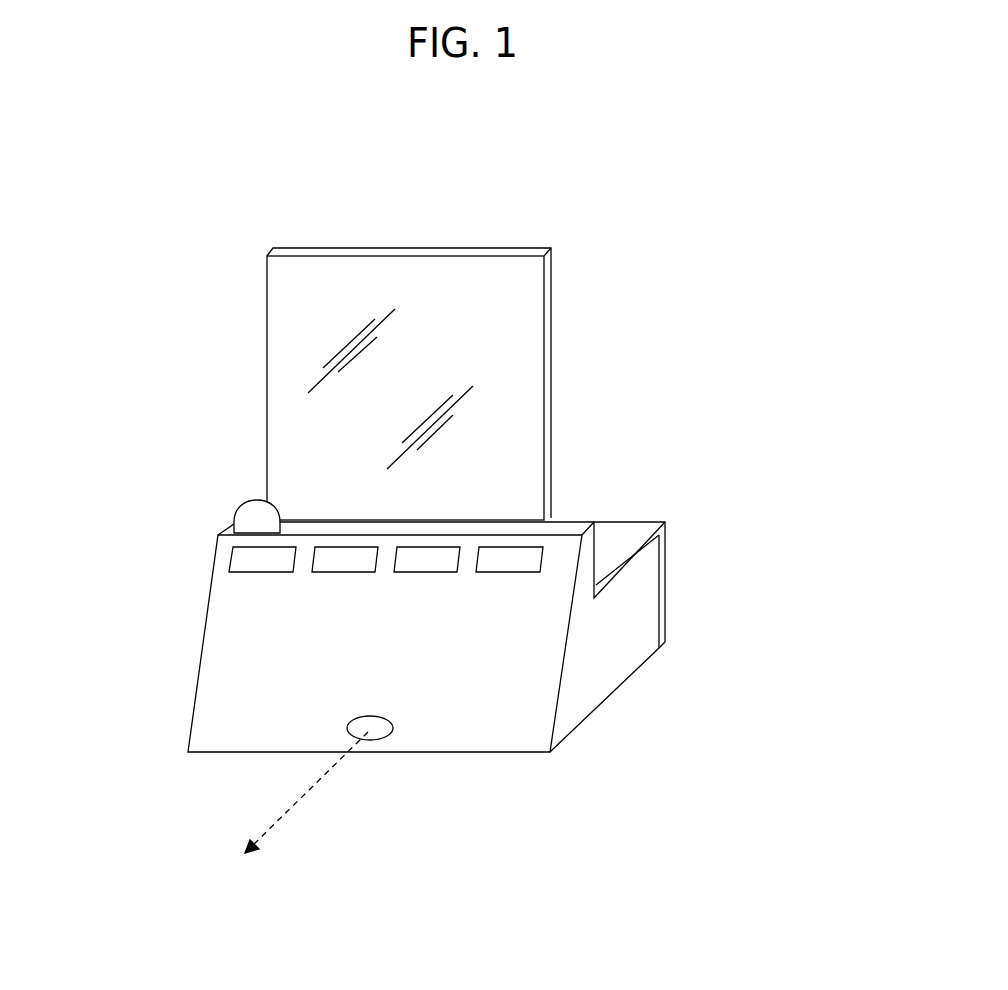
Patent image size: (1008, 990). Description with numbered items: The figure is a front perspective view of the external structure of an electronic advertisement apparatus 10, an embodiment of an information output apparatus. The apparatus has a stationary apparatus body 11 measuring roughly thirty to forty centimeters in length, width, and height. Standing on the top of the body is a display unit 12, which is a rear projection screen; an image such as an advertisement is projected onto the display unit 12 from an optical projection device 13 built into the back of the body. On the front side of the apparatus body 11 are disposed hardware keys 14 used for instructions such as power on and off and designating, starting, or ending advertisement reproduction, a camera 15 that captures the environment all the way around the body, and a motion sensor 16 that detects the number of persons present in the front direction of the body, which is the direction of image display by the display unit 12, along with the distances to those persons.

The electronic advertisement apparatus 10 is at (514, 214).
The apparatus body 11 is at (596, 682).
The display unit 12 is at (290, 316).
The optical projection device 13 is at (612, 546).
The hardware (H/W) keys 14 is at (520, 557).
The camera 15 is at (246, 515).
The motion sensor 16 is at (377, 736).